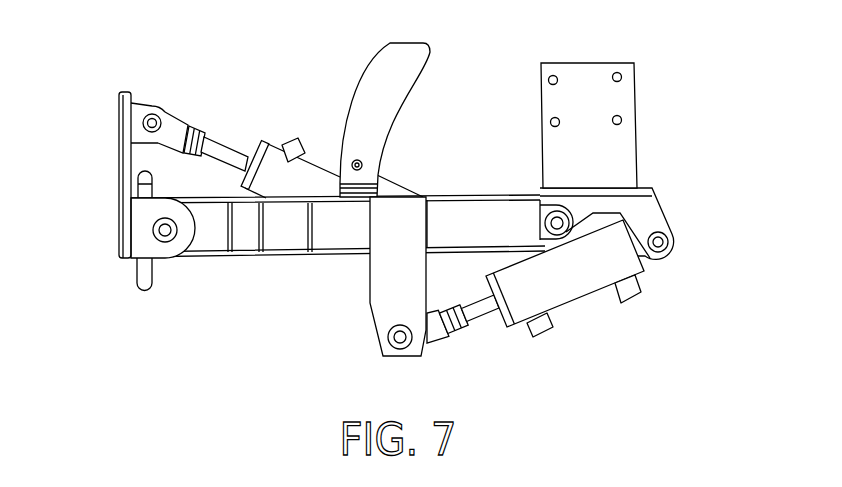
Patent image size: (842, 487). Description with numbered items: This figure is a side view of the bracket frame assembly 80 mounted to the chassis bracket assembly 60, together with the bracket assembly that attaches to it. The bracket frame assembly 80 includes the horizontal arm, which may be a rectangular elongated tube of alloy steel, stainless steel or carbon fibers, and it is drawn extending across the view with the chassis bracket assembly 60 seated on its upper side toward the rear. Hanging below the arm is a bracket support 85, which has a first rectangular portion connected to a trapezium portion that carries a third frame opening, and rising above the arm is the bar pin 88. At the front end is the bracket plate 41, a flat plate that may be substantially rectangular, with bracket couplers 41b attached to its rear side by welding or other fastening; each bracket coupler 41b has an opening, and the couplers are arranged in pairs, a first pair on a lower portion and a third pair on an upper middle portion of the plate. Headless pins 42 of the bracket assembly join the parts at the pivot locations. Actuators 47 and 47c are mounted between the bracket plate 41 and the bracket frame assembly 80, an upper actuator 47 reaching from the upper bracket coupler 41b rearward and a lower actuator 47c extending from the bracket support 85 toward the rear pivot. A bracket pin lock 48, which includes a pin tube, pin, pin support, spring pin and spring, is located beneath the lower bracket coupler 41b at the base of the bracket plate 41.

The bracket plate 41 is at (127, 128).
The bracket couplers 41b is at (142, 110).
The headless pins 42 is at (665, 239).
The actuator 47 is at (265, 150).
The actuator 47c is at (555, 292).
The bracket pin lock 48 is at (142, 284).
The chassis bracket assembly 60 is at (641, 129).
The bracket frame assembly 80 is at (466, 186).
The bracket support 85 is at (387, 306).
The bar pin 88 is at (388, 54).